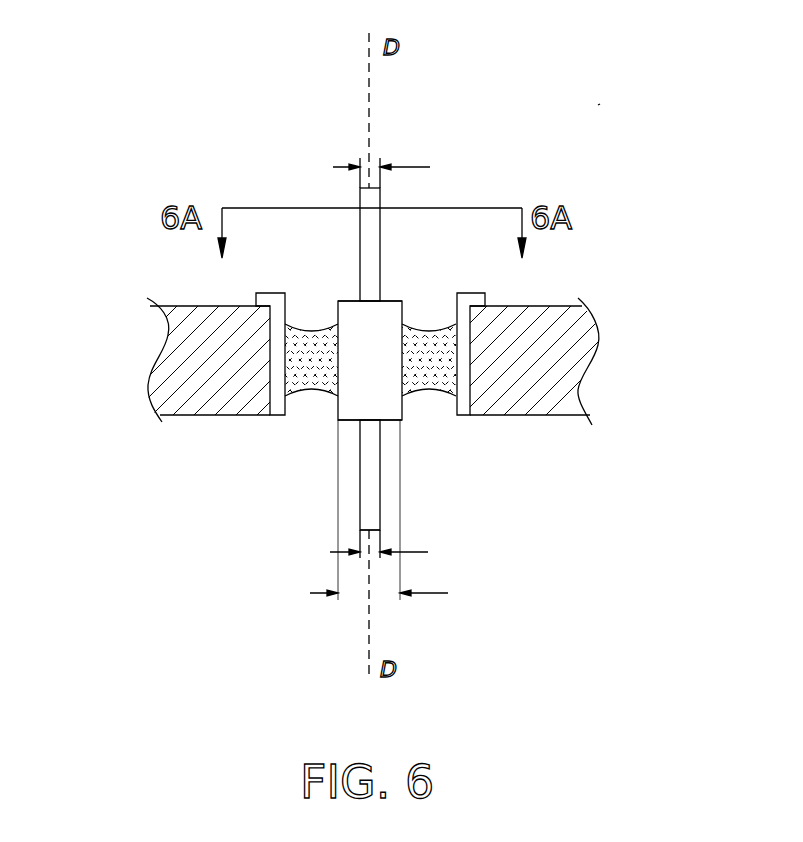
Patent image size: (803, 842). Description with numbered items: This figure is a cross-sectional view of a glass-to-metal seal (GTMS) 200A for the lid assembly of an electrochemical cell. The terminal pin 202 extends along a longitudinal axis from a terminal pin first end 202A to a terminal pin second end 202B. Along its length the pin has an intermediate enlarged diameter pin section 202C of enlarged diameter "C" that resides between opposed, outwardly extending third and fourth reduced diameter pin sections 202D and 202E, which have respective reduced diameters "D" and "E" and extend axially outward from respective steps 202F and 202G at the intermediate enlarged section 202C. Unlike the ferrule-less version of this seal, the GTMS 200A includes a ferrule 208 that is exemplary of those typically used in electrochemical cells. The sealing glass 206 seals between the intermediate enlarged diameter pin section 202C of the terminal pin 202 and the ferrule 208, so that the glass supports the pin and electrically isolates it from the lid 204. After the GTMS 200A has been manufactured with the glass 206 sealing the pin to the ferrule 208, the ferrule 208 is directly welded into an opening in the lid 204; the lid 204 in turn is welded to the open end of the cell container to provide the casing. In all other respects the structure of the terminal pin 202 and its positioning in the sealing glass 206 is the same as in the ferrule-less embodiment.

The glass-to-metal seal (GTMS) 200A is at (598, 105).
The terminal pin 202 is at (394, 351).
The terminal pin first end 202A is at (369, 530).
The terminal pin second end 202B is at (366, 188).
The intermediate enlarged diameter pin section 202C is at (350, 316).
The third reduced diameter pin section 202D is at (368, 474).
The fourth reduced diameter pin section 202E is at (370, 202).
The step 202F is at (390, 421).
The step 202G is at (350, 299).
The lid 204 is at (172, 307).
The sealing glass 206 is at (312, 397).
The ferrule 208 is at (473, 294).